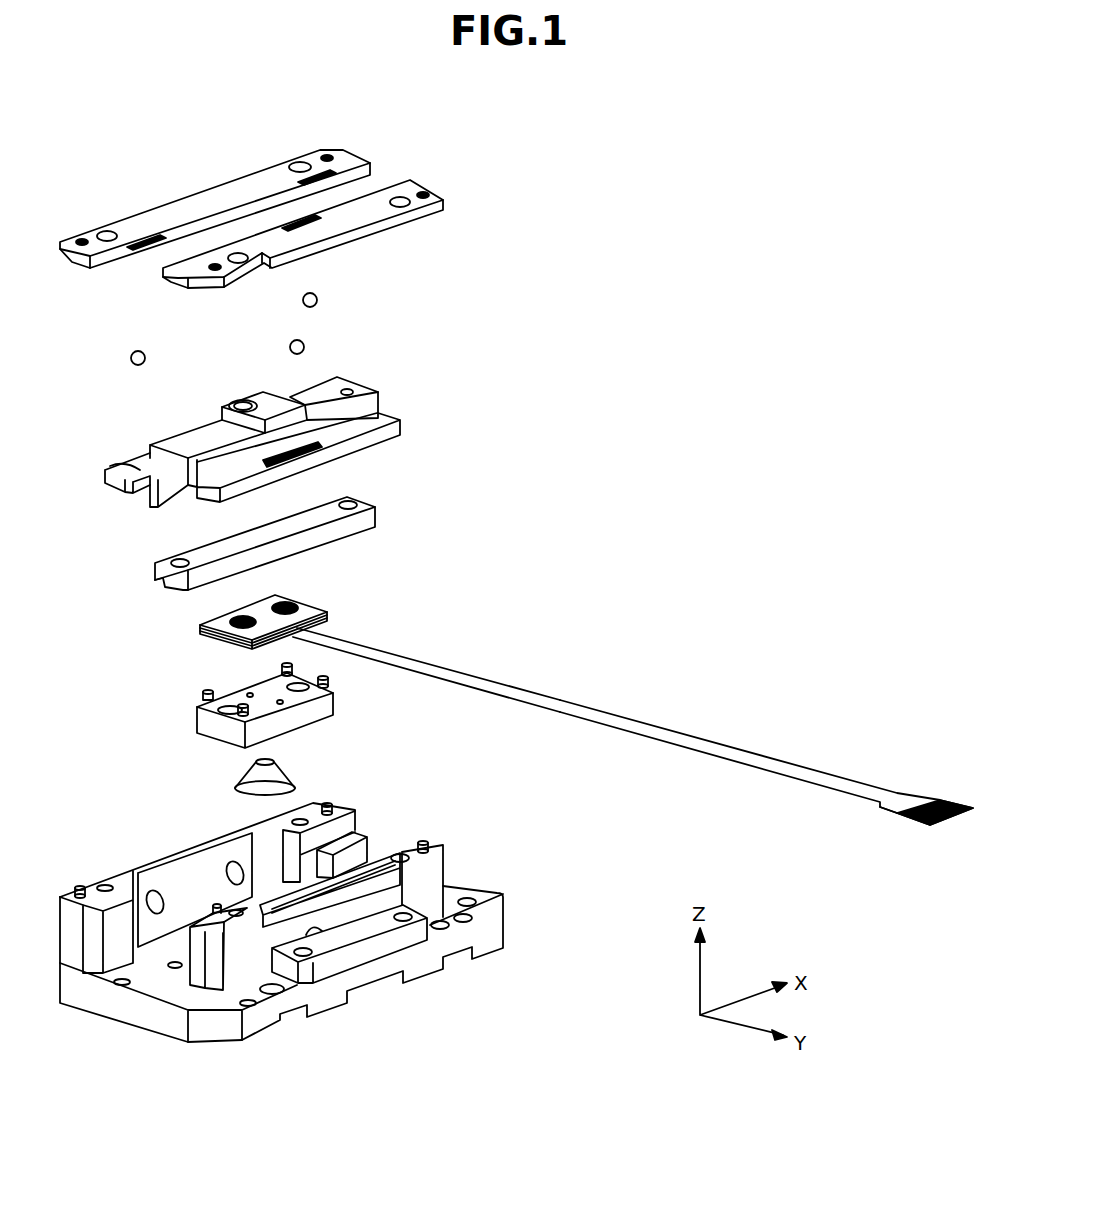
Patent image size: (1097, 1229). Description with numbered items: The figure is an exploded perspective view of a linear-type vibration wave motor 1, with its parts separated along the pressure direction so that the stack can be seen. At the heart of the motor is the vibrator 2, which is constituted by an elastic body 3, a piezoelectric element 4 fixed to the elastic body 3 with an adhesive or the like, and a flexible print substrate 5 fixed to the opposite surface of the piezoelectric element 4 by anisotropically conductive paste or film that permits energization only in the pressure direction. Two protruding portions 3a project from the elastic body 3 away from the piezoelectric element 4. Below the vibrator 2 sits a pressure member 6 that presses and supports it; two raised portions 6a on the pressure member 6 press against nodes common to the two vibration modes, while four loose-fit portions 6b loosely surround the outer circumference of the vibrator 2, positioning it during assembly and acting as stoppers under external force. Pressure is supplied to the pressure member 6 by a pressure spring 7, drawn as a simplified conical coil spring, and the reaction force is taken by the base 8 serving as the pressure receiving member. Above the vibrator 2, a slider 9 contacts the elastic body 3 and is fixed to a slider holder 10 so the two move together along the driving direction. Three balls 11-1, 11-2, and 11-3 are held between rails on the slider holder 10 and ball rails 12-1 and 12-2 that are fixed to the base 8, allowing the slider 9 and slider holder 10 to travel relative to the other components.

The vibration wave motor 1 is at (690, 237).
The vibrator 2 is at (193, 639).
The elastic body 3 is at (264, 600).
The protruding portions 3a is at (289, 603).
The piezoelectric element 4 is at (313, 630).
The flexible print substrate 5 is at (560, 700).
The pressure member 6 is at (268, 708).
The raised portions 6a is at (250, 693).
The loose-fit portions 6b is at (328, 682).
The pressure spring 7 is at (287, 767).
The base 8 is at (472, 889).
The slider 9 is at (377, 511).
The slider holder 10 is at (378, 400).
The ball 11-1 is at (318, 299).
The ball 11-2 is at (305, 346).
The ball 11-3 is at (136, 365).
The ball rail 12-1 is at (444, 206).
The ball rail 12-2 is at (372, 169).